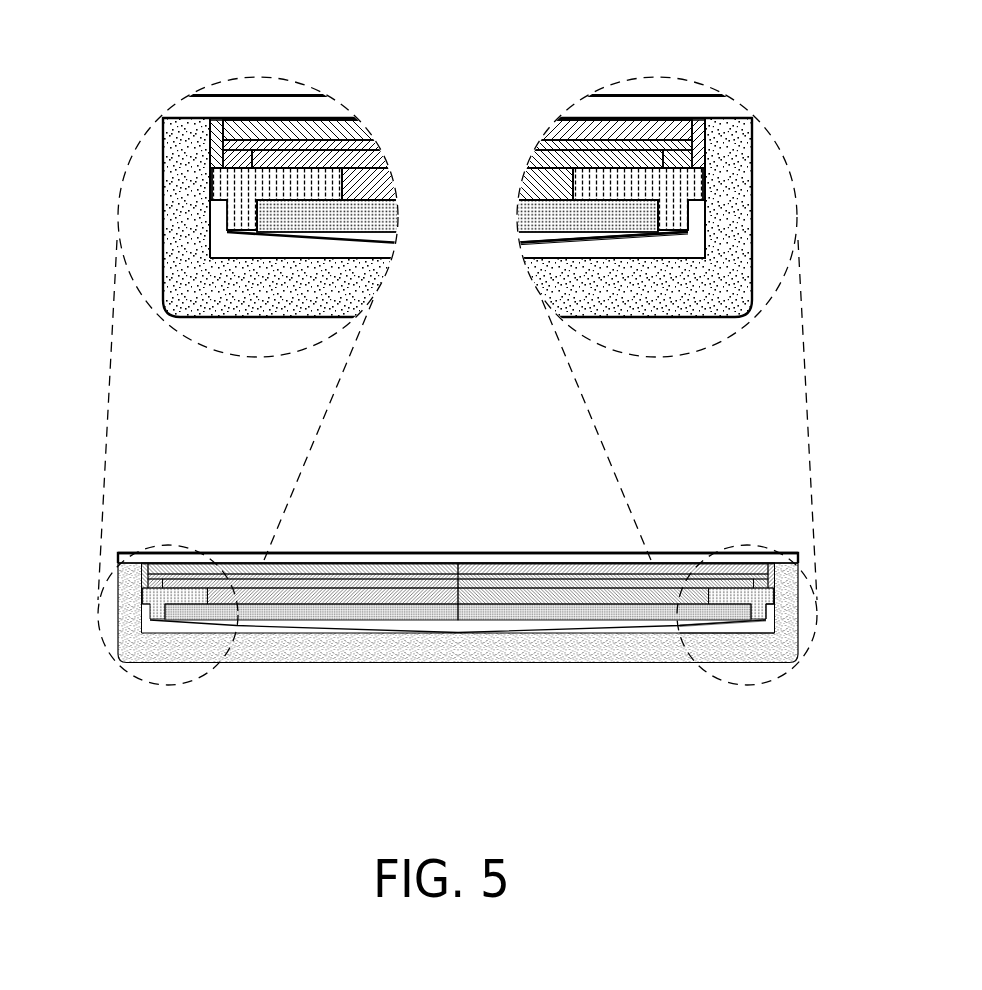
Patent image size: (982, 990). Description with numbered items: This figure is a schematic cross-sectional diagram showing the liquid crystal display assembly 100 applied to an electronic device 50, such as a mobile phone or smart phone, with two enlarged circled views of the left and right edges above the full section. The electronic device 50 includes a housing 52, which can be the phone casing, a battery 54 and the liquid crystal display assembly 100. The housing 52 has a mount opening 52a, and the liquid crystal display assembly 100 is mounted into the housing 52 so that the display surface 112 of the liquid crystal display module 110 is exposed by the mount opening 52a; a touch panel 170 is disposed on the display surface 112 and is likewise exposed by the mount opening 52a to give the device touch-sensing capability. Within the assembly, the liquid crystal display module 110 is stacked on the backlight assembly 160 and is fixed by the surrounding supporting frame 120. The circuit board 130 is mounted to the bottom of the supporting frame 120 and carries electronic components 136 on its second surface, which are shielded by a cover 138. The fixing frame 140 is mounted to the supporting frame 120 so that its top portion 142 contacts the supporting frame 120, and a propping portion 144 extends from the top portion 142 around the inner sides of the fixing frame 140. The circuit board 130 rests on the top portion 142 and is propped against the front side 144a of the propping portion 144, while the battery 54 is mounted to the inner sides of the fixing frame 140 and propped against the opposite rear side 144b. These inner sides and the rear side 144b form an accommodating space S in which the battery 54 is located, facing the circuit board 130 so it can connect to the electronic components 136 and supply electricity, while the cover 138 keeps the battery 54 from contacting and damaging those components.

The electronic device 50 is at (836, 470).
The housing 52 is at (181, 153).
The mount opening 52a is at (221, 130).
The battery 54 is at (345, 282).
The liquid crystal display assembly 100 is at (696, 530).
The liquid crystal display module 110 is at (250, 135).
The display surface 112 is at (282, 108).
The supporting frame 120 is at (255, 163).
The circuit board 130 is at (232, 228).
The electronic components 136 is at (360, 243).
The cover 138 is at (322, 220).
The fixing frame 140 is at (703, 188).
The top portion of the fixing frame 142 is at (704, 157).
The propping portion 144 is at (595, 170).
The front side of the propping portion 144a is at (644, 158).
The rear side of the propping portion 144b is at (565, 247).
The backlight assembly 160 is at (222, 142).
The touch panel 170 is at (727, 110).
The accommodating space S is at (538, 250).